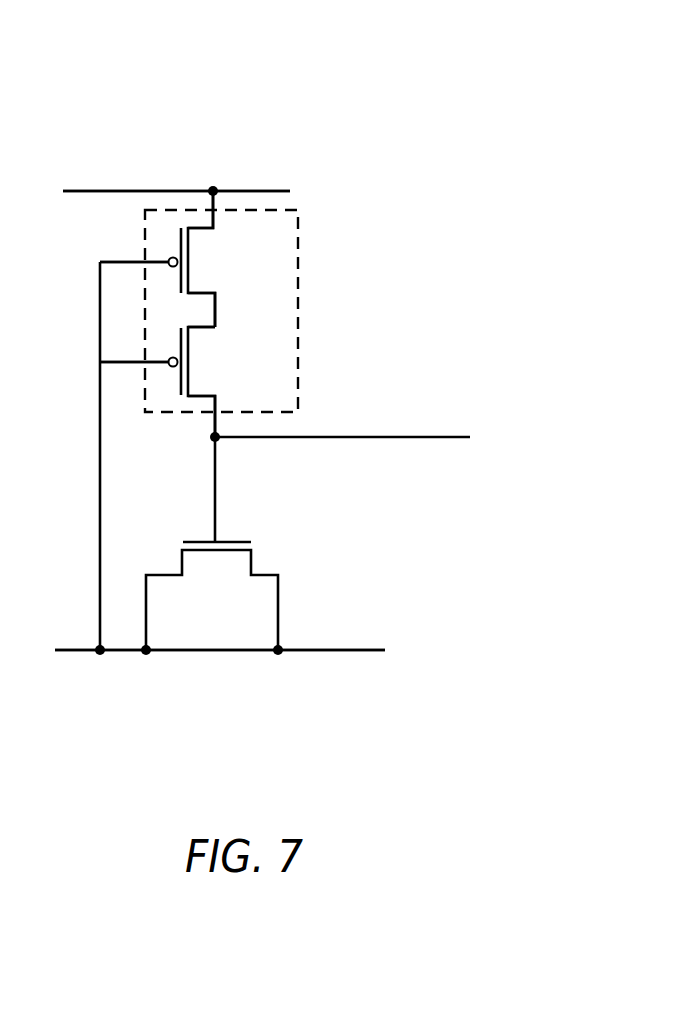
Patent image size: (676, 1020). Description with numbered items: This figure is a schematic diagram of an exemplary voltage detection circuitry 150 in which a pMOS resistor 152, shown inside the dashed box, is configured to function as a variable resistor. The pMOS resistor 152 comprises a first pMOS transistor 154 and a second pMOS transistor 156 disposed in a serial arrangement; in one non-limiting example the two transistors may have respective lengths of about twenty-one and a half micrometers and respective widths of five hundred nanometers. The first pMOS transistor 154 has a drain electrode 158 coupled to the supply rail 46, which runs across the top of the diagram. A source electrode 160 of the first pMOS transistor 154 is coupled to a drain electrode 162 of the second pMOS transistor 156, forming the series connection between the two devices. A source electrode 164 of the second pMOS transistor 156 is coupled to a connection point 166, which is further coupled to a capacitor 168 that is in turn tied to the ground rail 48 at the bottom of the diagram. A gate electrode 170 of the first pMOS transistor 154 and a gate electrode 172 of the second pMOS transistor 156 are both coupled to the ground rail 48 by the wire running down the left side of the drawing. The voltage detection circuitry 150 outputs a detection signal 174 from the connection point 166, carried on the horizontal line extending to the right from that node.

The supply rail 46 is at (270, 191).
The ground rail 48 is at (325, 650).
The voltage detection circuitry 150 is at (481, 126).
The pMOS resistor 152 is at (298, 283).
The first pMOS transistor 154 is at (190, 257).
The second pMOS transistor 156 is at (190, 362).
The drain electrode 158 is at (202, 229).
The source electrode 160 is at (200, 293).
The drain electrode 162 is at (200, 326).
The source electrode 164 is at (207, 395).
The connection point 166 is at (199, 447).
The capacitor 168 is at (232, 542).
The gate electrode 170 is at (121, 261).
The gate electrode 172 is at (123, 365).
The detection signal 174 is at (385, 442).